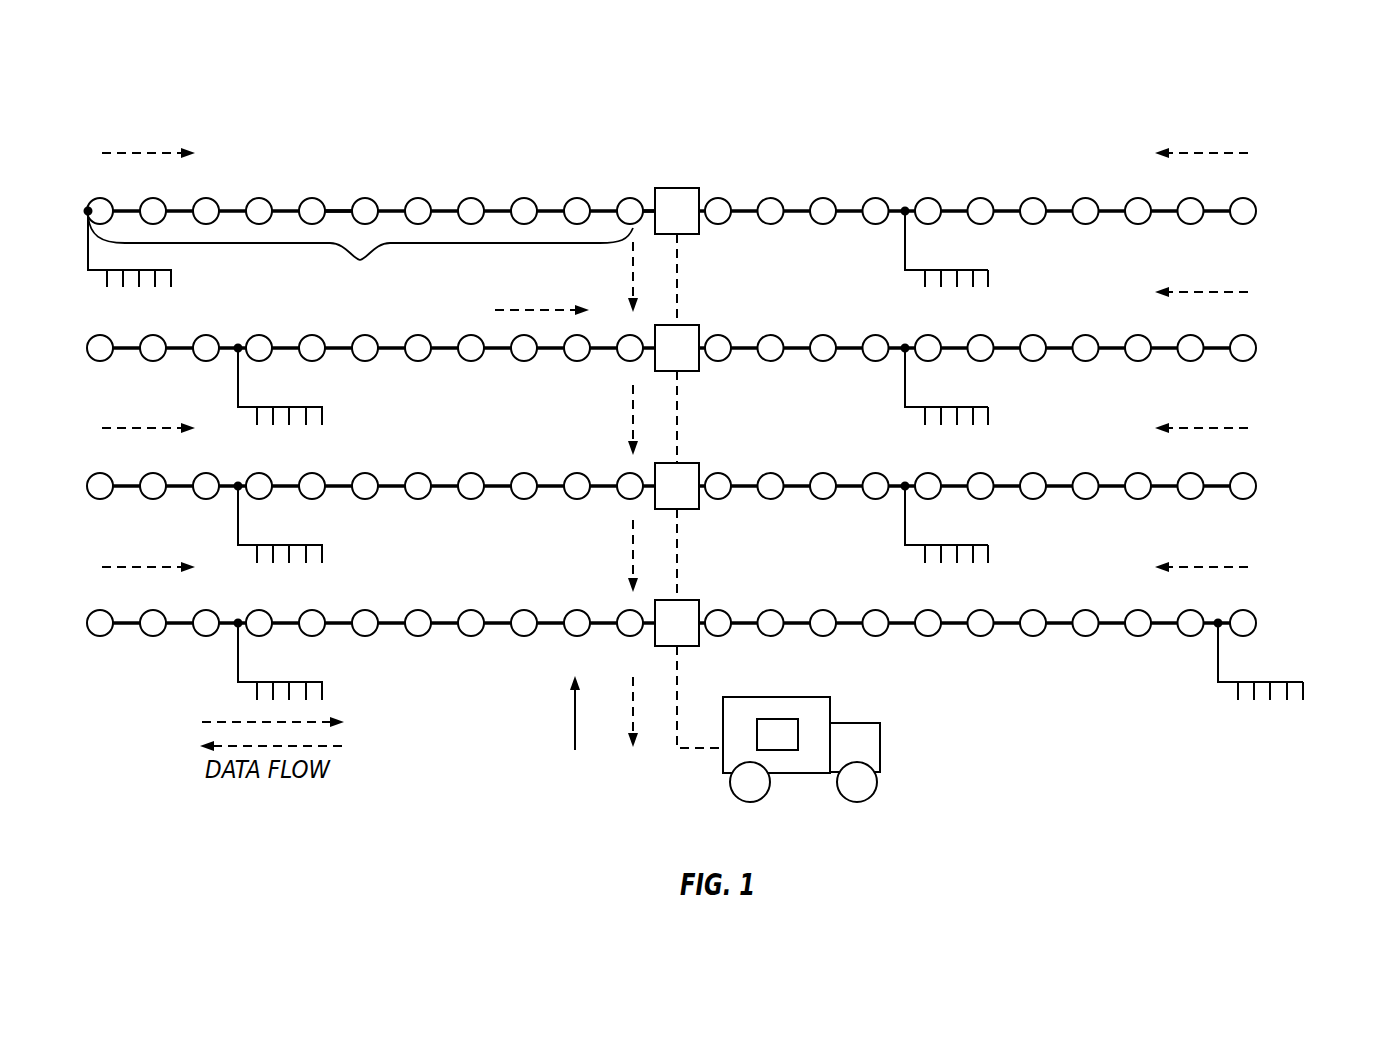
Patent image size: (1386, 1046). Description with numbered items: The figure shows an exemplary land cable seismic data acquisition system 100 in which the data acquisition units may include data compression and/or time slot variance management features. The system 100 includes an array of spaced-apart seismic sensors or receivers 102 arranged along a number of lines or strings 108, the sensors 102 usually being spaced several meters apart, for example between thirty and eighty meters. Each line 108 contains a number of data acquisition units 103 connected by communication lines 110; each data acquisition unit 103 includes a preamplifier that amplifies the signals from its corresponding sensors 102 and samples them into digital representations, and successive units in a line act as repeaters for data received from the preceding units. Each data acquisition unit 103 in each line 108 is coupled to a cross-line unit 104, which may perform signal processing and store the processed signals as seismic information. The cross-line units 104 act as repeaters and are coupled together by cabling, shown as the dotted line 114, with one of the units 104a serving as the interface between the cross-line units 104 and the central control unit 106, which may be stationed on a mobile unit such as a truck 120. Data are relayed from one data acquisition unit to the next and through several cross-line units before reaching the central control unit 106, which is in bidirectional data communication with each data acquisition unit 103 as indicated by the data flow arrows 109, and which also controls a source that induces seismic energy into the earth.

The land cable seismic data acquisition system 100 is at (292, 88).
The seismic sensors or receivers 102 is at (172, 275).
The data acquisition units 103 is at (1256, 213).
The cross-line unit 104 is at (690, 188).
The cross-line unit serving as interface 104a is at (690, 600).
The central control unit 106 is at (783, 719).
The lines or strings 108 is at (360, 255).
The data flow arrows 109 is at (575, 712).
The communication lines 110 is at (334, 222).
The cabling 114 is at (677, 281).
The truck 120 is at (822, 728).